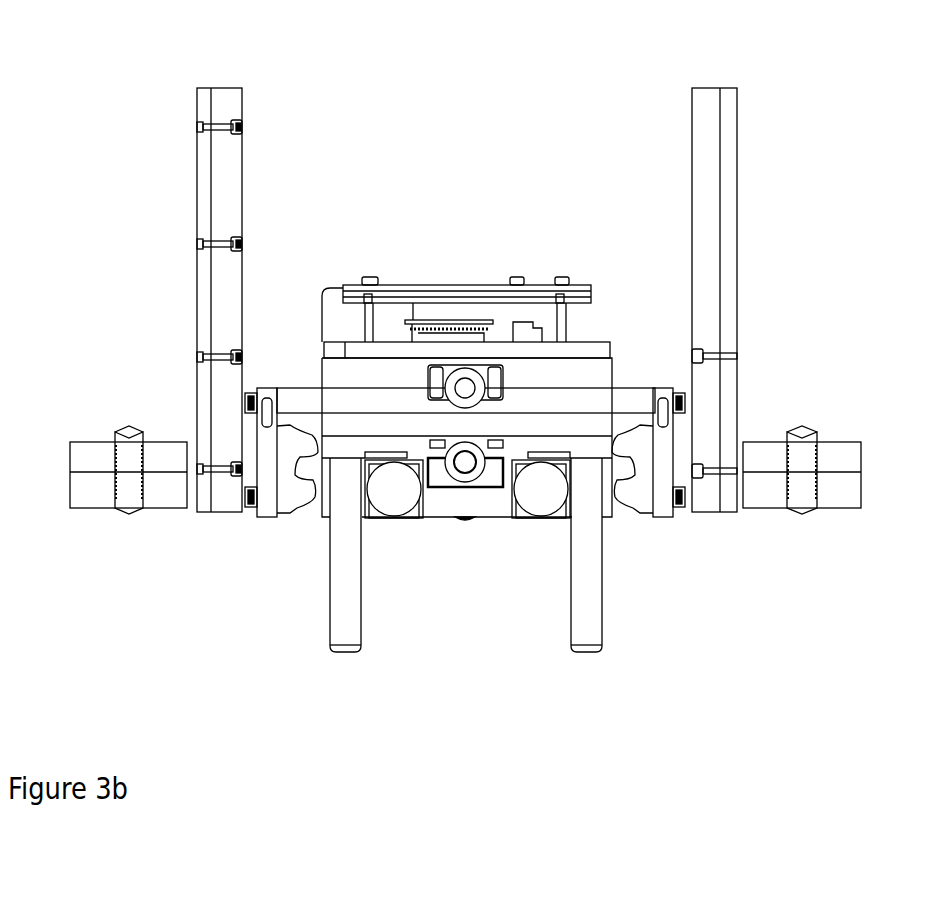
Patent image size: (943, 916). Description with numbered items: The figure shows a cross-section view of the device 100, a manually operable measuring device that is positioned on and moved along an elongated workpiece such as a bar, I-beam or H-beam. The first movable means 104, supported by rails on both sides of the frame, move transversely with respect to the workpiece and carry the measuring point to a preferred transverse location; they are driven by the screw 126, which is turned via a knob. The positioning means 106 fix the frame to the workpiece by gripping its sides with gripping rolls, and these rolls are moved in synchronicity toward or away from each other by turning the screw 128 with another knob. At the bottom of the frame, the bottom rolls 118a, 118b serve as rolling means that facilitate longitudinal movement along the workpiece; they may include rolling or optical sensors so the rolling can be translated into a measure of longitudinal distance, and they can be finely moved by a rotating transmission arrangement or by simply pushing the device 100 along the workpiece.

The device 100 is at (122, 44).
The first movable means 104 is at (290, 467).
The positioning means 106 is at (330, 568).
The bottom roll 118a is at (393, 507).
The bottom roll 118b is at (542, 503).
The screw 126 is at (465, 388).
The screw 128 is at (465, 462).